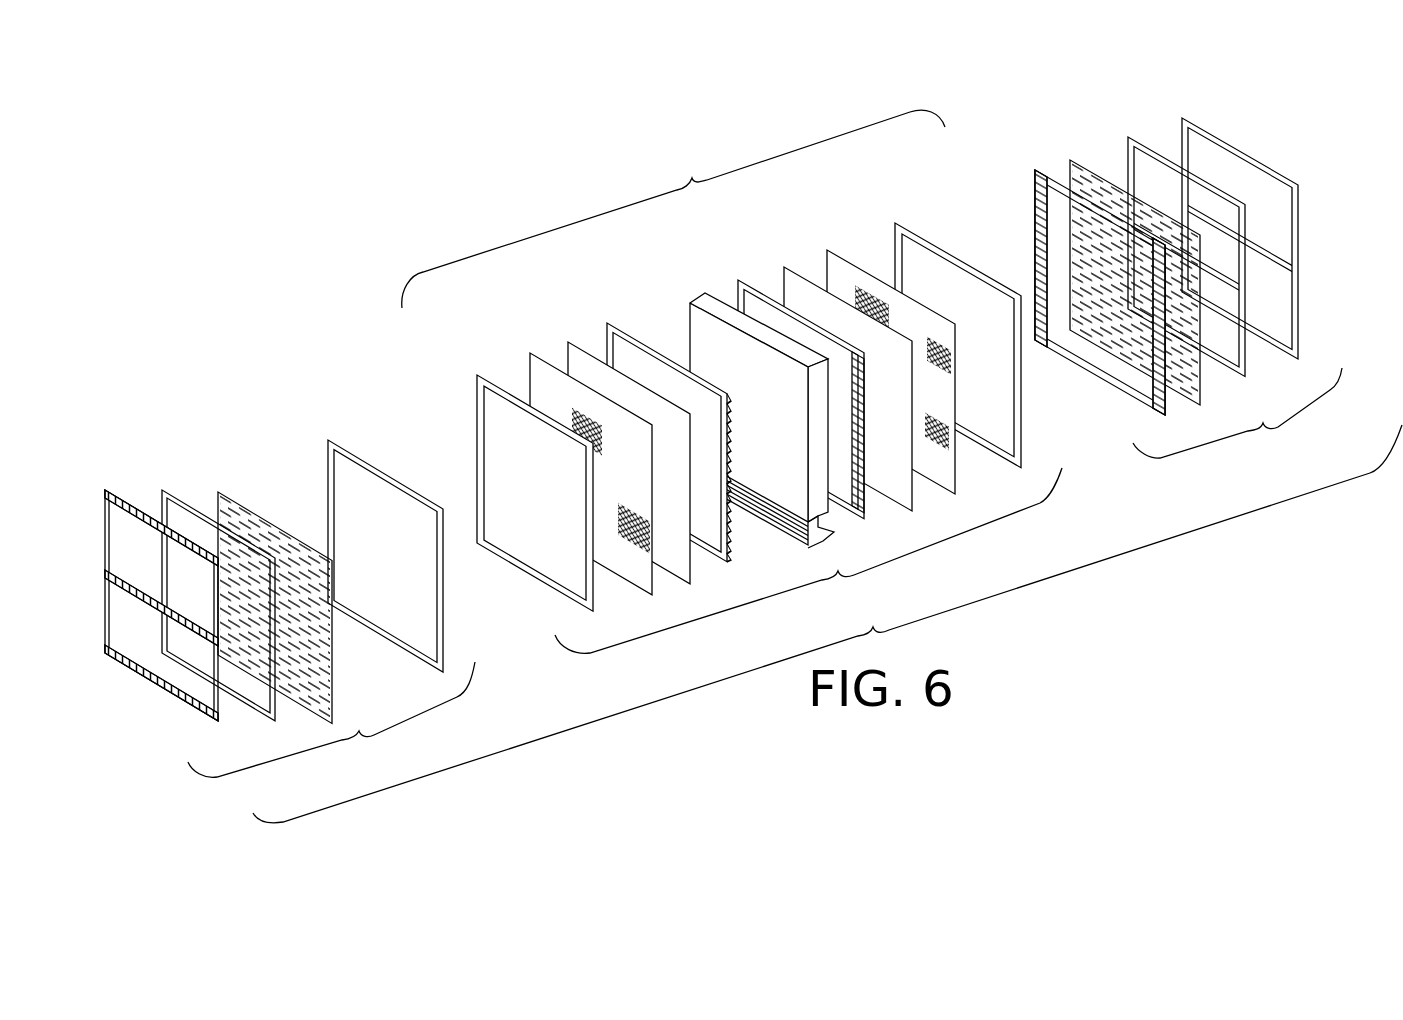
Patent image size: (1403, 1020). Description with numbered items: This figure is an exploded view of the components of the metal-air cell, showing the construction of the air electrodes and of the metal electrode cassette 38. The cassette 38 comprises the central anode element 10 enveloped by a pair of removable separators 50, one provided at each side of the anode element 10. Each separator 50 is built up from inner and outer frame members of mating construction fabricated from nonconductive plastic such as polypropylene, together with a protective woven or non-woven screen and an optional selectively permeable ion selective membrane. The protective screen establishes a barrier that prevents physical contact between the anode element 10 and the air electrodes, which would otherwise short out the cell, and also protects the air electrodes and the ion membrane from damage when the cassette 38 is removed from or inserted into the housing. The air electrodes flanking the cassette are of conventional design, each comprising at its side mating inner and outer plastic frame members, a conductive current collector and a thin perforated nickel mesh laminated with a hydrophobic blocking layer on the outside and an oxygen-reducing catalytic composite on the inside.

The anode element 10 is at (822, 548).
The metal electrode cassette 38 is at (673, 209).
The separator 50 is at (808, 562).